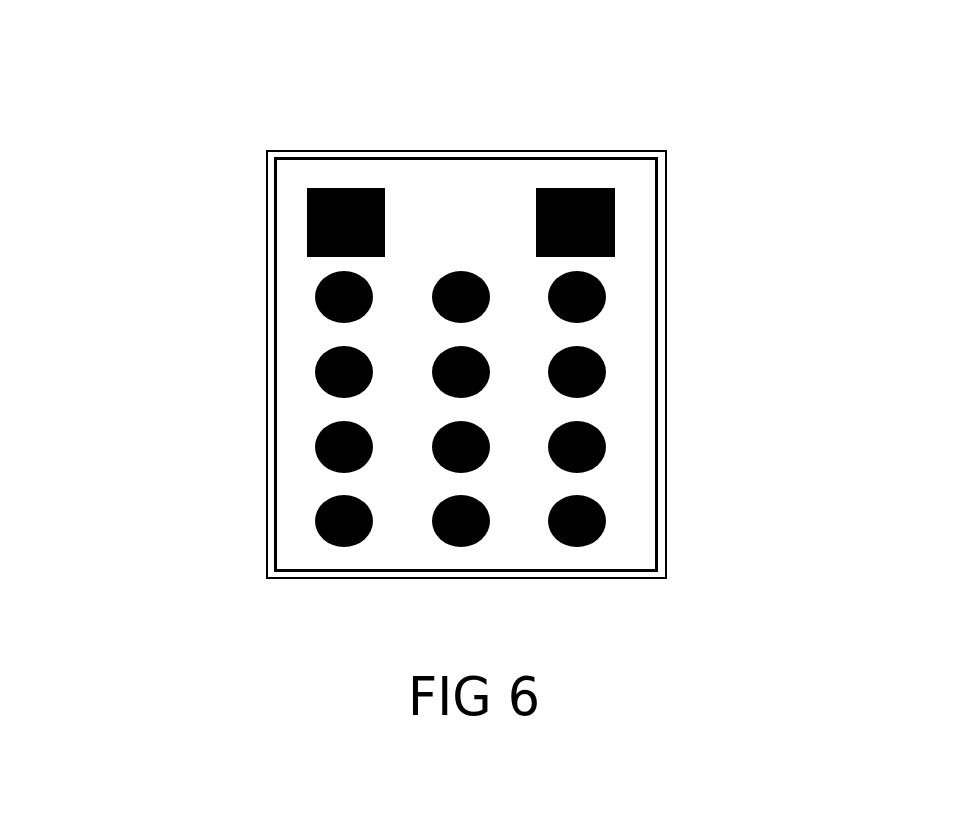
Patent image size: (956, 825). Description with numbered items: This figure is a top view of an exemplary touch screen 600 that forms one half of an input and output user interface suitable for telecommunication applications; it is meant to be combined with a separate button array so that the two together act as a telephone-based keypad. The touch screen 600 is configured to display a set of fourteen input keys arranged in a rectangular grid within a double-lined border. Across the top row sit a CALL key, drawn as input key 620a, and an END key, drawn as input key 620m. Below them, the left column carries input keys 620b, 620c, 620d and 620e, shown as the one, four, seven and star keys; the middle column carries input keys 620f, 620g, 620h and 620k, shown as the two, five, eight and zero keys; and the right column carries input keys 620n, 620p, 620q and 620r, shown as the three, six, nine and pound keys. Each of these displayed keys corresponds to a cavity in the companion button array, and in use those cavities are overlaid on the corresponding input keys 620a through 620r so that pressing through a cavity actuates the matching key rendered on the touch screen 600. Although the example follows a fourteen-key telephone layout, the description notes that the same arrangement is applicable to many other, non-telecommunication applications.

The touch screen 600 is at (230, 101).
The input key 620a is at (325, 188).
The input key 620b is at (315, 297).
The input key 620c is at (315, 372).
The input key 620d is at (315, 447).
The input key 620e is at (315, 521).
The input key 620f is at (455, 272).
The input key 620g is at (443, 349).
The input key 620h is at (443, 424).
The input key 620k is at (443, 498).
The input key 620m is at (592, 188).
The input key 620n is at (606, 297).
The input key 620p is at (606, 372).
The input key 620q is at (606, 447).
The input key 620r is at (606, 521).